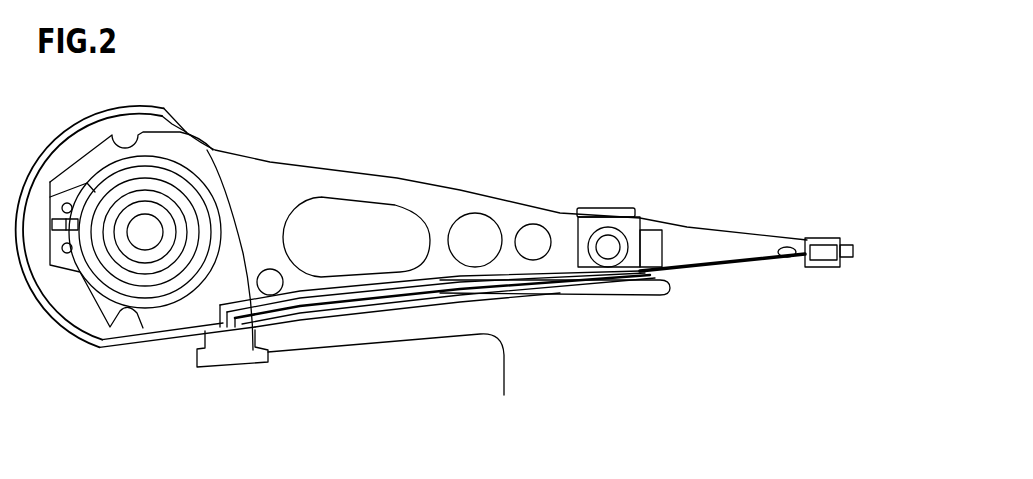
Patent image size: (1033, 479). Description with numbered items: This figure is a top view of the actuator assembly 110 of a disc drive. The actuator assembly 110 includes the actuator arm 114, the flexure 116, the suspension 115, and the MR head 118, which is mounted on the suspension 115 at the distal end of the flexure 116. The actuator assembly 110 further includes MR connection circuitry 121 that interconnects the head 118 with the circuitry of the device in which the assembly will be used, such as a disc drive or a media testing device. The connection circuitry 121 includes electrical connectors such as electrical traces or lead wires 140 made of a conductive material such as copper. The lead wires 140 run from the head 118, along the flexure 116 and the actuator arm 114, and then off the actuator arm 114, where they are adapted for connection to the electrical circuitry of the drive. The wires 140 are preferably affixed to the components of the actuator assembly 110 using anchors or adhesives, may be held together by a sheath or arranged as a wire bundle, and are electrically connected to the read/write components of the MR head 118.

The actuator assembly 110 is at (425, 128).
The actuator arm 114 is at (267, 165).
The flexure 116 is at (678, 228).
The suspension 115 is at (820, 242).
The MR head 118 is at (852, 242).
The lead wires 140 is at (477, 288).
The MR connection circuitry 121 is at (367, 360).